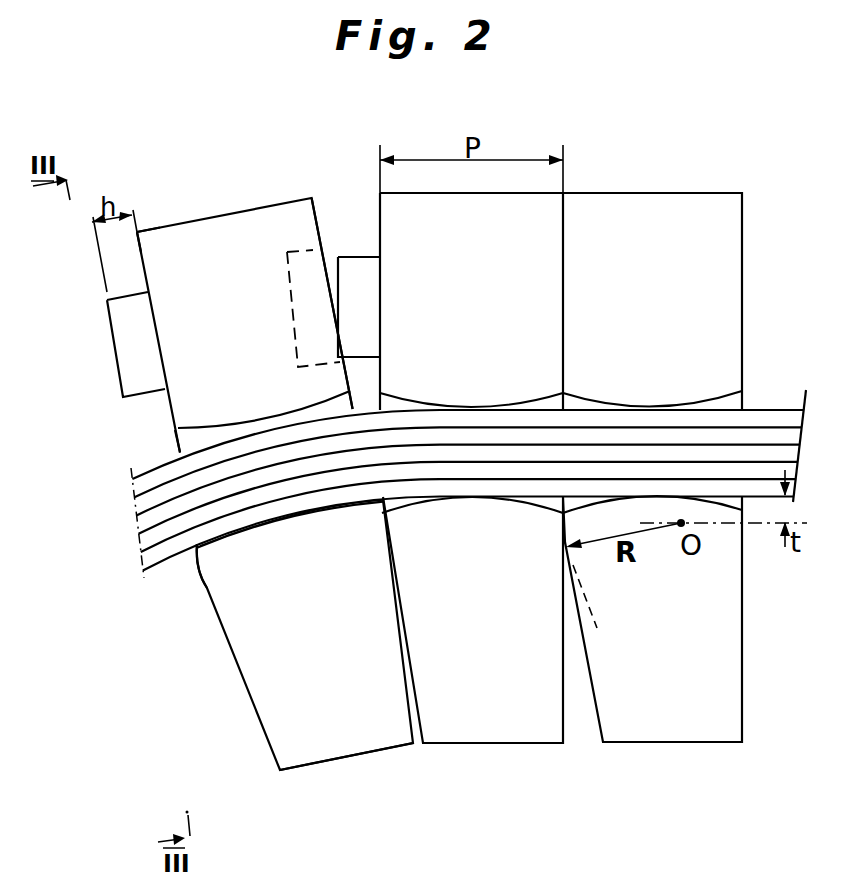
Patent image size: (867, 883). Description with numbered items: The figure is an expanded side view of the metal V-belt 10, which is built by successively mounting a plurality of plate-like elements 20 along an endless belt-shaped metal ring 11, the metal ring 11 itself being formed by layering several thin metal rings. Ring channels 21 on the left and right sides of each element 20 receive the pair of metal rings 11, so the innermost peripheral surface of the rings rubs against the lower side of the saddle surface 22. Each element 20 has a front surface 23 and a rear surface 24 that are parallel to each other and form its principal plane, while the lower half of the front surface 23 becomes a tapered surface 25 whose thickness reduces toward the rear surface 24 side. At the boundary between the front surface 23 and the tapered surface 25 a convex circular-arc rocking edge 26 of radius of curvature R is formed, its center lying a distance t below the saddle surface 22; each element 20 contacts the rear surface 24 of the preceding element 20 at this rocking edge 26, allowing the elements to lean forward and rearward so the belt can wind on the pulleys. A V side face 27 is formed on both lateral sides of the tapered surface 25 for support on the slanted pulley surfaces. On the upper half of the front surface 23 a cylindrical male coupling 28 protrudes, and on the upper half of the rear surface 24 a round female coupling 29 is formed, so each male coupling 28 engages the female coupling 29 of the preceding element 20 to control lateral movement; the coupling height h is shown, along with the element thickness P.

The V-belt 10 is at (706, 170).
The metal ring 11 is at (771, 409).
The element 20 is at (246, 195).
The ring channel 21 is at (182, 438).
The saddle surface 22 is at (283, 520).
The front surface 23 is at (143, 240).
The rear surface 24 is at (321, 210).
The tapered surface 25 is at (232, 663).
The rocking edge 26 is at (206, 590).
The V side face 27 is at (333, 727).
The male coupling 28 is at (116, 343).
The female coupling 29 is at (282, 280).